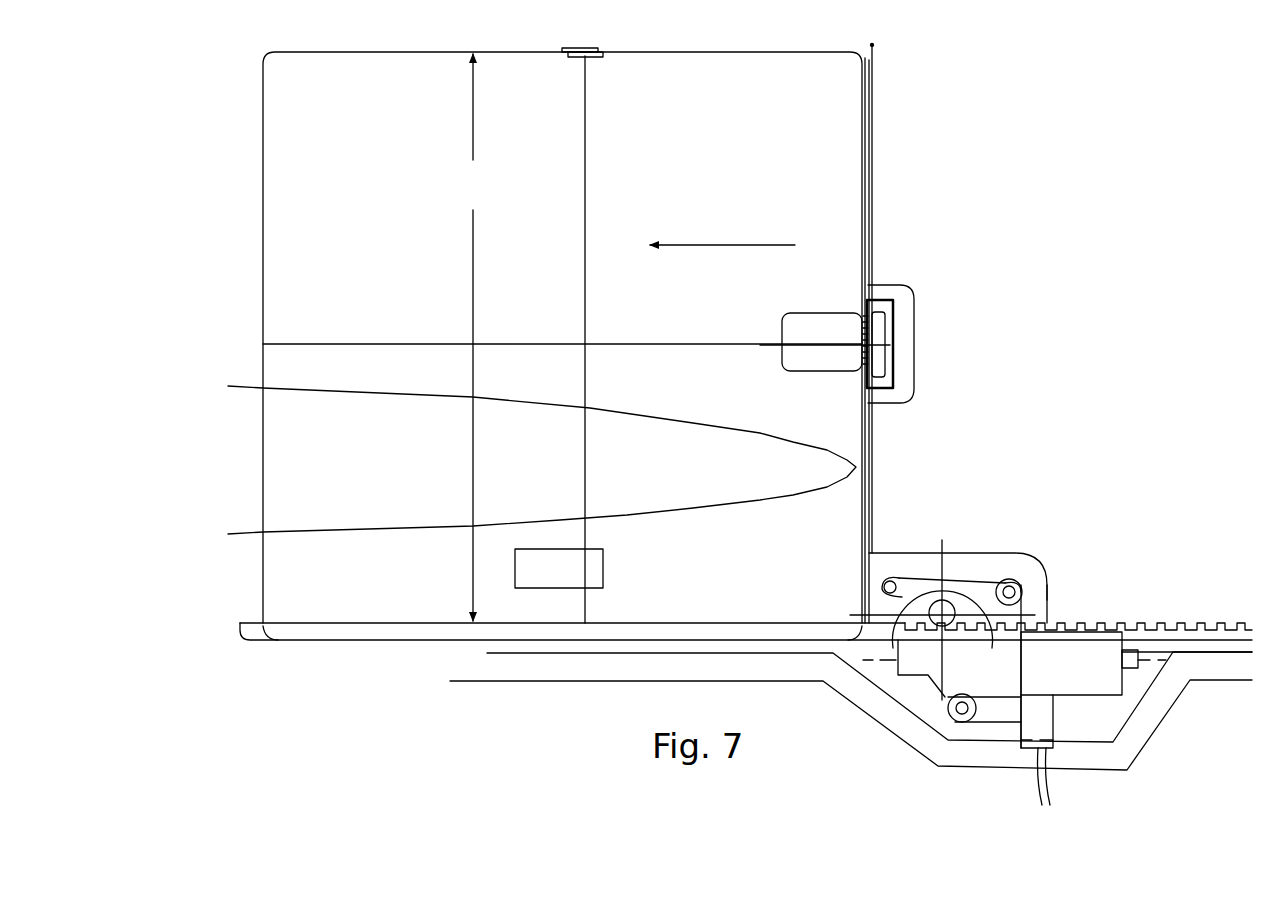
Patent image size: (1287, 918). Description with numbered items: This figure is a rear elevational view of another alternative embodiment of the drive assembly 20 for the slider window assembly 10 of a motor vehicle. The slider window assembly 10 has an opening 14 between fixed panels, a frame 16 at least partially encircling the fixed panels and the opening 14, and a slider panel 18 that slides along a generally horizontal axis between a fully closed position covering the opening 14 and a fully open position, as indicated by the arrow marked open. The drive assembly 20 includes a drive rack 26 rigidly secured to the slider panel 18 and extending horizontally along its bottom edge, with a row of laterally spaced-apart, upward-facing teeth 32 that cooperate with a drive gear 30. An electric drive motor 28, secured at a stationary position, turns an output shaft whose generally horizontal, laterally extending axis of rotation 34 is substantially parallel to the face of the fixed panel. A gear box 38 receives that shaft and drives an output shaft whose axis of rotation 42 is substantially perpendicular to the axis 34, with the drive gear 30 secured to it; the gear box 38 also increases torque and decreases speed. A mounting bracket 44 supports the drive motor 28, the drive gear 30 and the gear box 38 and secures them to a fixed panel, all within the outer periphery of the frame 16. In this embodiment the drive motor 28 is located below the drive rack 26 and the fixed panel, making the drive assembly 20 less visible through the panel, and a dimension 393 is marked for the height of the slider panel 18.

The slider window assembly 10 is at (1079, 326).
The opening 14 is at (856, 206).
The frame 16 is at (560, 681).
The slider panel 18 is at (845, 123).
The drive assembly 20 is at (1024, 546).
The drive rack 26 is at (1205, 646).
The electric drive motor 28 is at (1098, 697).
The drive gear 30 is at (953, 583).
The teeth 32 is at (1120, 625).
The axis of rotation 34 is at (880, 662).
The gear box 38 is at (987, 573).
The axis of rotation 42 is at (938, 612).
The mounting bracket 44 is at (1047, 597).
The door height dimension 393 is at (474, 337).